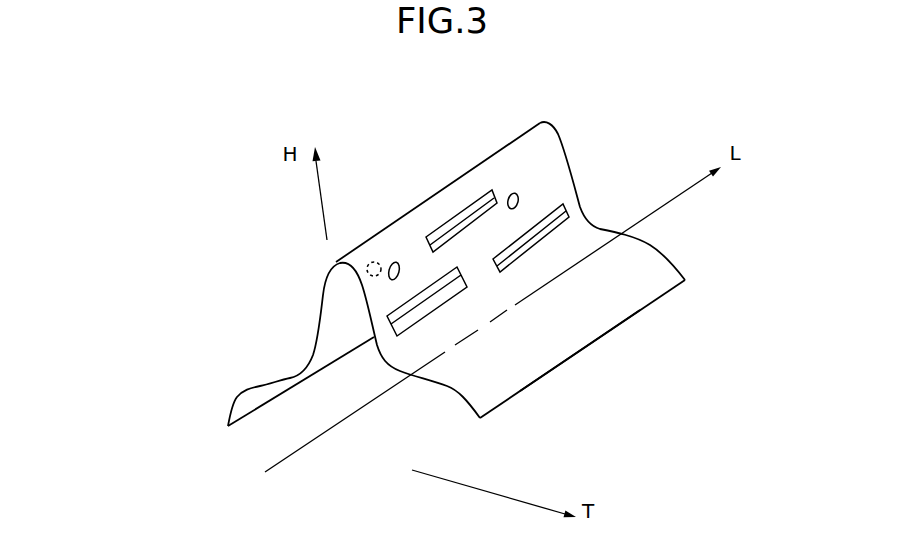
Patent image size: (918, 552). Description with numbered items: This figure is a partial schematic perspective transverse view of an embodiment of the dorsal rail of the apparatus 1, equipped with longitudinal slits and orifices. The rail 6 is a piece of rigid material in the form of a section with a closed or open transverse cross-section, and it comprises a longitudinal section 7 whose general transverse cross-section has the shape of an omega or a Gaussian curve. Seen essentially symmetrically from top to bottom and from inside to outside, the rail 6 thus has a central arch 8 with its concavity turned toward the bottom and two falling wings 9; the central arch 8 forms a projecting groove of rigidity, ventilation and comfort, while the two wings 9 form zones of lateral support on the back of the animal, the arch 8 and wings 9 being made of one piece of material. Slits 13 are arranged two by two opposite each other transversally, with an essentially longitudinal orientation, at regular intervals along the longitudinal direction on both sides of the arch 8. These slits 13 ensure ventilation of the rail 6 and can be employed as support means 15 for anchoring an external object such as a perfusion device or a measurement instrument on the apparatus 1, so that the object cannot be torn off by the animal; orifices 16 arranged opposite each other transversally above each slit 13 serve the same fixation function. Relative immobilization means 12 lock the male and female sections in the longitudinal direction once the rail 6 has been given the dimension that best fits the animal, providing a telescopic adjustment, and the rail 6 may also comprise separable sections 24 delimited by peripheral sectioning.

The apparatus 1 is at (128, 297).
The rail 6 is at (722, 258).
The longitudinal section 7 is at (638, 300).
The central arch 8 is at (556, 129).
The falling wings 9 is at (236, 399).
The relative immobilization means 12 is at (375, 302).
The slits 13 is at (570, 221).
The support means 15 is at (426, 228).
The orifices 16 is at (513, 197).
The separable sections 24 is at (569, 360).